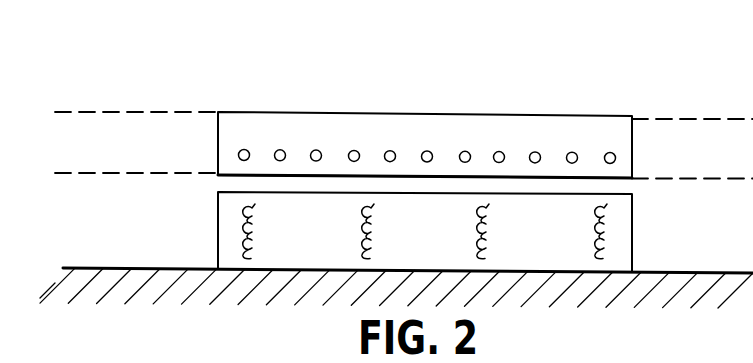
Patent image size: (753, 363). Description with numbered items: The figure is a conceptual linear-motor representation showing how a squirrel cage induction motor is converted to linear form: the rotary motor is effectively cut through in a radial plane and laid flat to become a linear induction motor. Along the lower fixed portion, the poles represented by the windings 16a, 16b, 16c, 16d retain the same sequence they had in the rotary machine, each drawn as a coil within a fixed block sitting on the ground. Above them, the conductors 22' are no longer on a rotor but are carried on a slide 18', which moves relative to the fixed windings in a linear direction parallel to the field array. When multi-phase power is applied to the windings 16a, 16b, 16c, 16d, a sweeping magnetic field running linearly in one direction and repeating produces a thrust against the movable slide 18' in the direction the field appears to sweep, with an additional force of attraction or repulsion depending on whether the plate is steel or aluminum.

The slide 18' is at (425, 122).
The conductors 22' is at (427, 123).
The winding 16a is at (254, 229).
The winding 16b is at (373, 229).
The winding 16c is at (488, 230).
The winding 16d is at (606, 232).